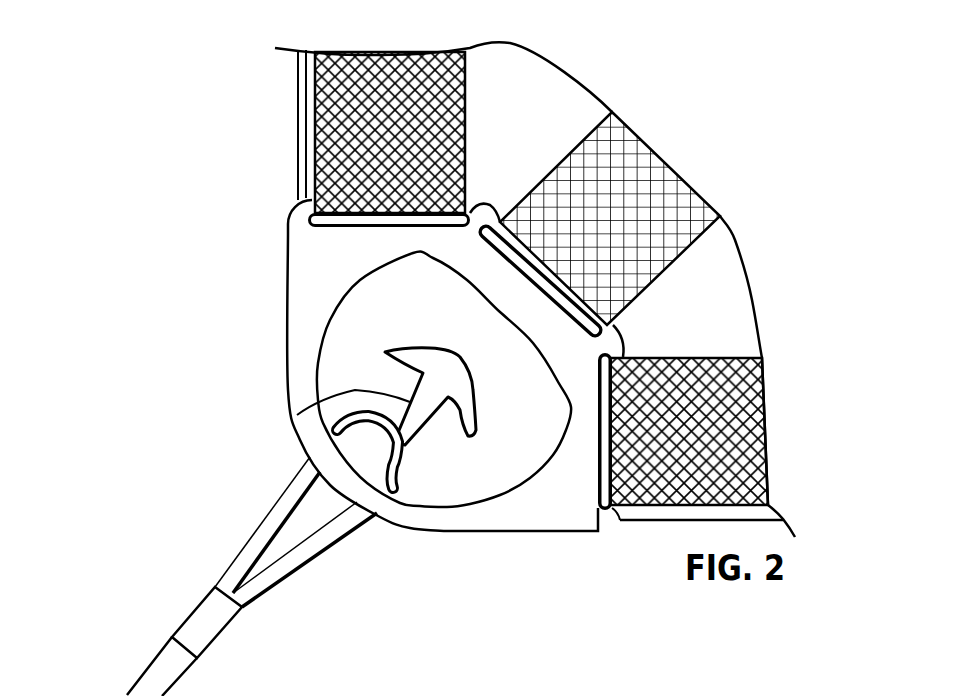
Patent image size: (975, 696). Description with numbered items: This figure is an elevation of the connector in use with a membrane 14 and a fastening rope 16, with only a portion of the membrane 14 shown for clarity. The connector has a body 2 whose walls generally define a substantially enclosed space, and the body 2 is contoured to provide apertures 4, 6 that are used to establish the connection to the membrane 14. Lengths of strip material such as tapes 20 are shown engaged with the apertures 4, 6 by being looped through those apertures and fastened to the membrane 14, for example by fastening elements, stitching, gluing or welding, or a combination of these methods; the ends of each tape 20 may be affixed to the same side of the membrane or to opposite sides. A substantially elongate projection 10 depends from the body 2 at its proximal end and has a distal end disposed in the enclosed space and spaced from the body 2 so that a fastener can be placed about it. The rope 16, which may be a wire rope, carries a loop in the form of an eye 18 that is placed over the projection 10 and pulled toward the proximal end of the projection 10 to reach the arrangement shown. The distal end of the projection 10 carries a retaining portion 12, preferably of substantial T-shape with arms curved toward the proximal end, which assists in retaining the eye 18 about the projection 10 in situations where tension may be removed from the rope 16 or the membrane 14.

The body 2 is at (506, 514).
The aperture 4 is at (320, 222).
The aperture 6 is at (600, 494).
The projection 10 is at (297, 415).
The retaining portion 12 is at (443, 372).
The membrane 14 is at (545, 75).
The rope 16 is at (160, 670).
The eye 18 is at (303, 555).
The tapes 20 is at (407, 83).